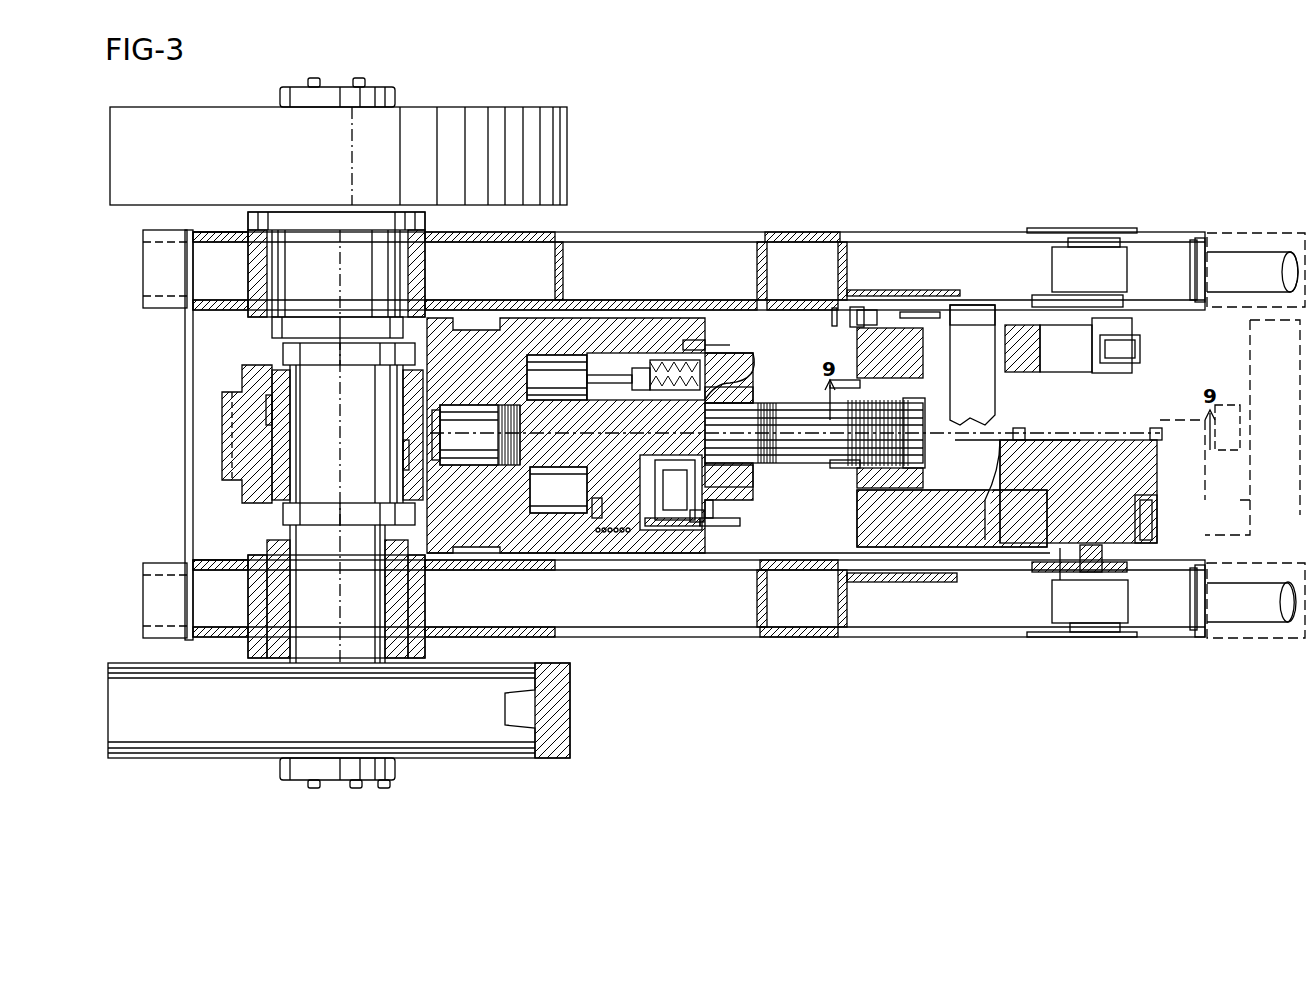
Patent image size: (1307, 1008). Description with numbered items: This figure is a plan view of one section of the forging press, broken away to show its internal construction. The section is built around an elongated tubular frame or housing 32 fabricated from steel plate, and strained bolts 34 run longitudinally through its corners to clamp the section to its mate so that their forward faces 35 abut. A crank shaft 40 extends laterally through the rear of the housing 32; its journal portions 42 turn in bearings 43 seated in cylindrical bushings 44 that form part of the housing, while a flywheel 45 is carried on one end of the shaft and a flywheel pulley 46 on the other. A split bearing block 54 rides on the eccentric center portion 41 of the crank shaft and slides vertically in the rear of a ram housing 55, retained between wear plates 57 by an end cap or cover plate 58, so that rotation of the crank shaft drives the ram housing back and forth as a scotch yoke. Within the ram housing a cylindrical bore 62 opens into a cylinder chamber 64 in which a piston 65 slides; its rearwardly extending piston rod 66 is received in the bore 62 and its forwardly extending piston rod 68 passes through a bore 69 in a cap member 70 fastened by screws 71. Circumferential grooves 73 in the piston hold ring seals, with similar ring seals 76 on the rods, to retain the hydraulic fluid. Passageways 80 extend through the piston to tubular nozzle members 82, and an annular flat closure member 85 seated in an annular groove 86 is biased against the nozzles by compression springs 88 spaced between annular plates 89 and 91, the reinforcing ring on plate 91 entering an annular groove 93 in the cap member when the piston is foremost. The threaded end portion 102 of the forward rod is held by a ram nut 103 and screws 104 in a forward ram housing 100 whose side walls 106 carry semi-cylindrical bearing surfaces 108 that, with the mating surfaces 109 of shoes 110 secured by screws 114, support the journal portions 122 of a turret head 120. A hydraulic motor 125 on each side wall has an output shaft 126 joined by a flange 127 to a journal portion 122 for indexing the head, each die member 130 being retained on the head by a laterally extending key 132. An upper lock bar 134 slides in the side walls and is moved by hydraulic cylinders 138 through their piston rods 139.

The tubular frame or housing 32 is at (796, 232).
The strained bolts 34 is at (135, 262).
The forward faces 35 is at (1197, 250).
The crank shaft 40 is at (272, 352).
The eccentric center portion 41 is at (334, 432).
The journal portions 42 is at (332, 644).
The bearings 43 is at (280, 235).
The cylindrical bushings 44 is at (255, 277).
The flywheel 45 is at (480, 130).
The flywheel pulley 46 is at (410, 745).
The split bearing block 54 is at (275, 395).
The ram housing 55 is at (488, 318).
The wear plates 57 is at (265, 425).
The end cap or cover plate 58 is at (225, 445).
The cylindrical bore 62 is at (479, 456).
The cylinder chamber 64 is at (560, 355).
The piston 65 is at (683, 432).
The rearwardly extending piston rod 66 is at (550, 467).
The forwardly extending piston rod 68 is at (790, 466).
The bore 69 is at (720, 400).
The cap member 70 is at (732, 360).
The screws 71 is at (735, 345).
The circumferential grooves 73 is at (600, 522).
The ring seals 76 is at (512, 425).
The passageways 80 is at (612, 378).
The tubular nozzle member 82 is at (640, 375).
The annular flat closure member 85 is at (668, 520).
The annular groove 86 is at (625, 535).
The compression springs 88 is at (680, 360).
The annular plate 89 is at (672, 528).
The annular plate 91 is at (697, 525).
The annular groove 93 is at (705, 495).
The forward ram housing 100 is at (855, 522).
The threaded end portion 102 is at (843, 468).
The ram nut 103 is at (905, 470).
The screws 104 is at (855, 325).
The side walls 106 is at (1045, 310).
The semi-cylindrical bearing surfaces 108 is at (1036, 548).
The mating surfaces 109 is at (1145, 520).
The shoes 110 is at (1150, 325).
The screws 114 is at (1143, 350).
The turret head 120 is at (1015, 412).
The journal portions 122 is at (1125, 540).
The hydraulic motor 125 is at (1118, 255).
The output shaft 126 is at (1090, 570).
The flange 127 is at (1072, 580).
The die member 130 is at (1090, 385).
The laterally extending key 132 is at (1155, 430).
The upper lock bar 134 is at (982, 320).
The hydraulic cylinders 138 is at (888, 315).
The piston rods 139 is at (936, 312).